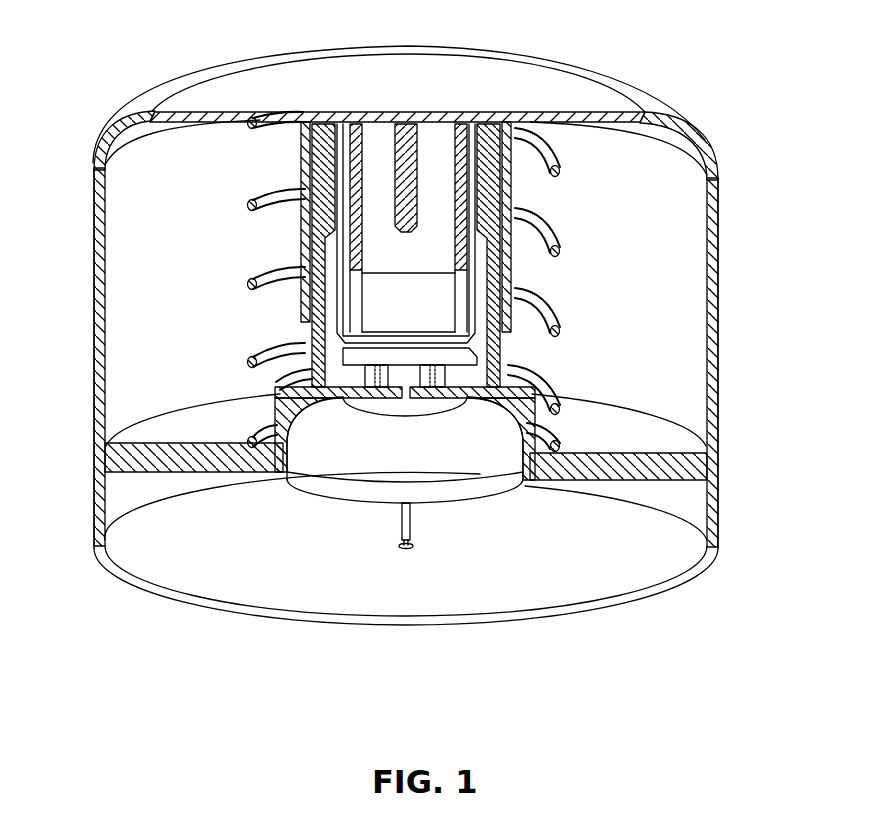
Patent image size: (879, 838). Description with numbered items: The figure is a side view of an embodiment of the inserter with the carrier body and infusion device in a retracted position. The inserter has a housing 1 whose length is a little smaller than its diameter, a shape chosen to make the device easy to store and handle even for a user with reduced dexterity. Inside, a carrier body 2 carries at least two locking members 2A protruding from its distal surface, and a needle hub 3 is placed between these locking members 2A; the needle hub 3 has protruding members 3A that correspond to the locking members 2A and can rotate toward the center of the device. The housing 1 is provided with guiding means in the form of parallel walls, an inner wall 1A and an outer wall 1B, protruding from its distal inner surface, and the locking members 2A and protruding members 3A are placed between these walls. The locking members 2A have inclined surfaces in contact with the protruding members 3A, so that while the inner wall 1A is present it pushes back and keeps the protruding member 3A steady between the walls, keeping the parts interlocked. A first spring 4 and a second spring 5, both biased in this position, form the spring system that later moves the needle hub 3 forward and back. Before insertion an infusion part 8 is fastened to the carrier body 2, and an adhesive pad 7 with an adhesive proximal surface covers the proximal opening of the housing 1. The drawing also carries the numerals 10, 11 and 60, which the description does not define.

The housing 1 is at (710, 270).
The inner wall 1A is at (358, 128).
The outer wall 1B is at (500, 157).
The carrier body 2 is at (104, 470).
The locking member 2A is at (305, 163).
The needle hub 3 is at (338, 357).
The protruding member 3A is at (330, 233).
The first spring 4 is at (552, 237).
The second spring 5 is at (308, 380).
The adhesive pad 7 is at (568, 583).
The infusion part 8 is at (325, 457).
The base 10 is at (382, 628).
The base wall 11 is at (660, 558).
The pin 60 is at (412, 528).